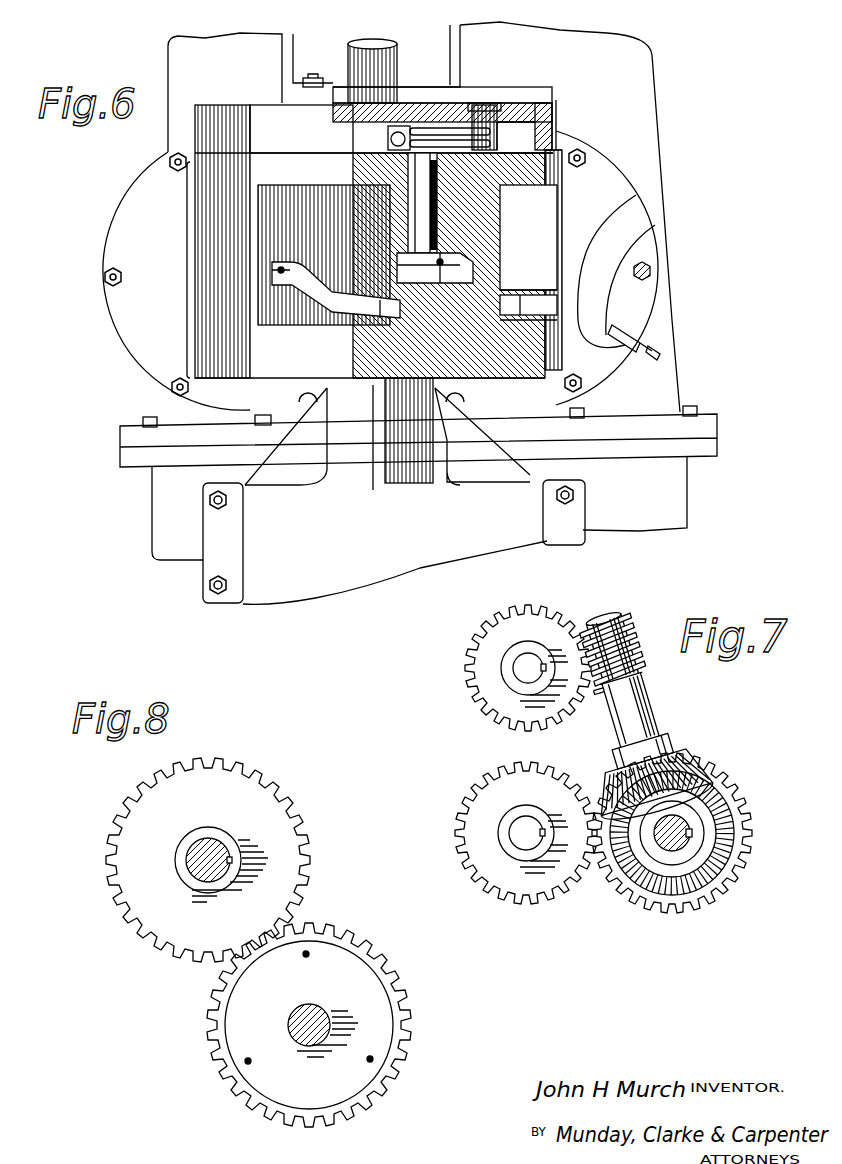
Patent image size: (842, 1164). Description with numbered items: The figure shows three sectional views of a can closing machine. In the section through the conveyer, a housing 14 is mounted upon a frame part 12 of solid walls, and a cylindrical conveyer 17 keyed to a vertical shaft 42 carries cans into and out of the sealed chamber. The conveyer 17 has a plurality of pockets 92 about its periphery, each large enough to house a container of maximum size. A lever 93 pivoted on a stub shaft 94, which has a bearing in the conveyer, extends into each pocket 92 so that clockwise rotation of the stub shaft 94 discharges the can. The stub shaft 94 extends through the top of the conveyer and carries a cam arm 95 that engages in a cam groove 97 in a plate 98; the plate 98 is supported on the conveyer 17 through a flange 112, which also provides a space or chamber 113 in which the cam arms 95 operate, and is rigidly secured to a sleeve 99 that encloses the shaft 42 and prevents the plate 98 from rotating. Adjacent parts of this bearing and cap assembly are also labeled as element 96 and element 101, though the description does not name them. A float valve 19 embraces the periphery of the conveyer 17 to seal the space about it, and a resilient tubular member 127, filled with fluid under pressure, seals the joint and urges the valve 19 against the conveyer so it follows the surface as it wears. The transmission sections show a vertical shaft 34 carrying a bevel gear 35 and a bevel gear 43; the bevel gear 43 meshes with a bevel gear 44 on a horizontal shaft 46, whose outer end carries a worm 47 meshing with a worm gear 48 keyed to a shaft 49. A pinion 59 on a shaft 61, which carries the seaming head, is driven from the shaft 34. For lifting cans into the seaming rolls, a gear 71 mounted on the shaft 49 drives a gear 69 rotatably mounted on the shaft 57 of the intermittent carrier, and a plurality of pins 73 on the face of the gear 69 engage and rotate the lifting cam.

In FIG. 6, the frame part 12 is at (663, 500).
In FIG. 6, the housing 14 is at (663, 325).
In FIG. 6, the conveyer 17 is at (208, 198).
In FIG. 6, the float valve 19 is at (187, 182).
In FIG. 6, the vertical shaft 42 is at (410, 85).
In FIG. 6, the pockets 92 is at (300, 207).
In FIG. 6, the lever 93 is at (458, 263).
In FIG. 6, the stub shaft 94 is at (437, 217).
In FIG. 6, the cam arm 95 is at (483, 130).
In FIG. 6, the bearing 96 is at (490, 135).
In FIG. 6, the cam groove 97 is at (490, 104).
In FIG. 6, the plate 98 is at (517, 100).
In FIG. 6, the sleeve 99 is at (390, 70).
In FIG. 6, the retainer 101 is at (553, 133).
In FIG. 6, the flange 112 is at (540, 130).
In FIG. 6, the chamber 113 is at (585, 163).
In FIG. 6, the tubular member 127 is at (620, 242).
In FIG. 7, the vertical shaft 34 is at (680, 848).
In FIG. 7, the bevel gear 35 is at (733, 848).
In FIG. 7, the bevel gear 43 is at (732, 808).
In FIG. 7, the bevel gear 44 is at (707, 747).
In FIG. 7, the horizontal shaft 46 is at (655, 705).
In FIG. 7, the worm 47 is at (632, 630).
In FIG. 7, the worm gear 48 is at (550, 613).
In FIG. 7, the shaft 49 is at (525, 668).
In FIG. 8, the shaft 49 is at (212, 853).
In FIG. 8, the shaft 57 is at (335, 1022).
In FIG. 7, the pinion 59 is at (498, 787).
In FIG. 7, the shaft 61 is at (525, 847).
In FIG. 8, the gear 69 is at (335, 955).
In FIG. 8, the gear 71 is at (283, 880).
In FIG. 8, the pins 73 is at (306, 957).